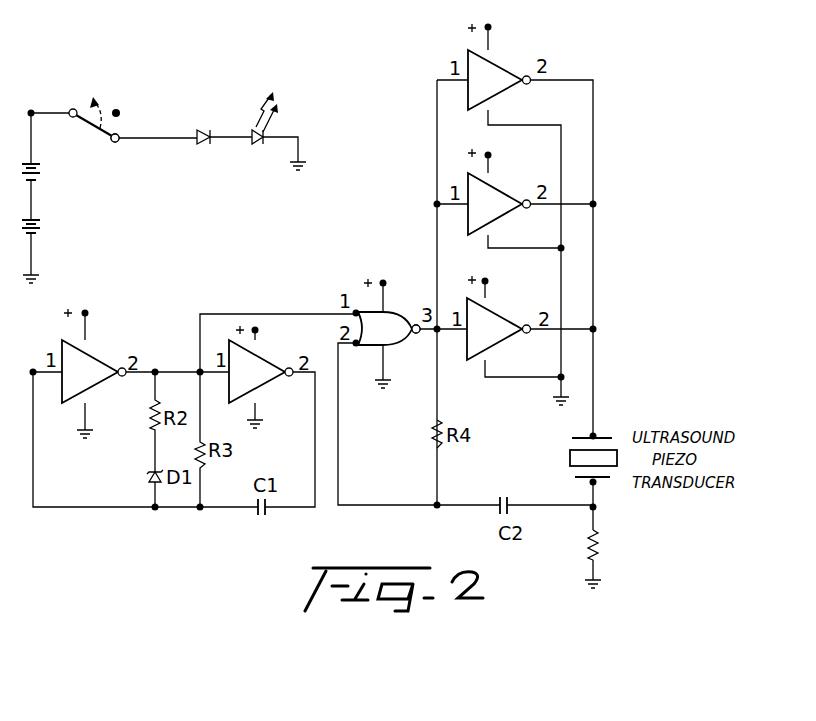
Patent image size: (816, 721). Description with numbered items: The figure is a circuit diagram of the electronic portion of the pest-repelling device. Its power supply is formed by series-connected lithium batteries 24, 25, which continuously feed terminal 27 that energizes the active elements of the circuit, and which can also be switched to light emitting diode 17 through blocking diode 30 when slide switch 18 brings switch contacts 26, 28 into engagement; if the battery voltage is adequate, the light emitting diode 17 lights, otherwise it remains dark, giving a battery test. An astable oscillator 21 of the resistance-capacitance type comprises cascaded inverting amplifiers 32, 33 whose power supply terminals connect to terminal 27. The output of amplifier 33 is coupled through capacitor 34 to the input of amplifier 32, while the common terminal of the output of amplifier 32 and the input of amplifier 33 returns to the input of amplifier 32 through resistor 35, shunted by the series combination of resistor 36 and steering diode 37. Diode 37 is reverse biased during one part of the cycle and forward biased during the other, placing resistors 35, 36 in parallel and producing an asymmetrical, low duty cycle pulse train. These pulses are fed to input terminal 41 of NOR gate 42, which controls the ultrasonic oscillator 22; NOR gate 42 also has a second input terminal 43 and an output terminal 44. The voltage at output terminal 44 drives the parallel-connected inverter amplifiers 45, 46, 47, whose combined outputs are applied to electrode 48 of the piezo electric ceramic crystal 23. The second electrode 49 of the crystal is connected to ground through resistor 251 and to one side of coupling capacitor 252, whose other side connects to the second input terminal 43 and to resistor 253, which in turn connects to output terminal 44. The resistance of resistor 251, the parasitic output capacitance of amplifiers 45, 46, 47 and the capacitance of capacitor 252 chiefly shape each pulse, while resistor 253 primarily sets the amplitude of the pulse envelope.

The light emitting diode 17 is at (255, 143).
The slide switch 18 is at (111, 86).
The astable oscillator 21 is at (73, 491).
The ultrasonic oscillator 22 is at (415, 415).
The piezo electric ceramic crystal 23 is at (580, 458).
The lithium battery 24 is at (43, 172).
The lithium battery 25 is at (43, 223).
The switch contact 26 is at (100, 128).
The power supply terminal 27 is at (72, 108).
The switch contact 28 is at (118, 143).
The blocking diode 30 is at (205, 143).
The inverting amplifier 32 is at (95, 363).
The inverting amplifier 33 is at (258, 373).
The capacitor 34 is at (265, 515).
The resistor 35 is at (205, 458).
The resistor 36 is at (148, 412).
The steering diode 37 is at (148, 472).
The input terminal 41 is at (356, 311).
The NOR gate 42 is at (390, 322).
The second input terminal 43 is at (356, 346).
The output terminal 44 is at (415, 334).
The inverter amplifier 45 is at (492, 328).
The inverter amplifier 46 is at (497, 210).
The inverter amplifier 47 is at (497, 87).
The electrode 48 is at (597, 433).
The second electrode 49 is at (597, 484).
The resistor 251 is at (598, 547).
The coupling capacitor 252 is at (508, 497).
The resistor 253 is at (430, 437).